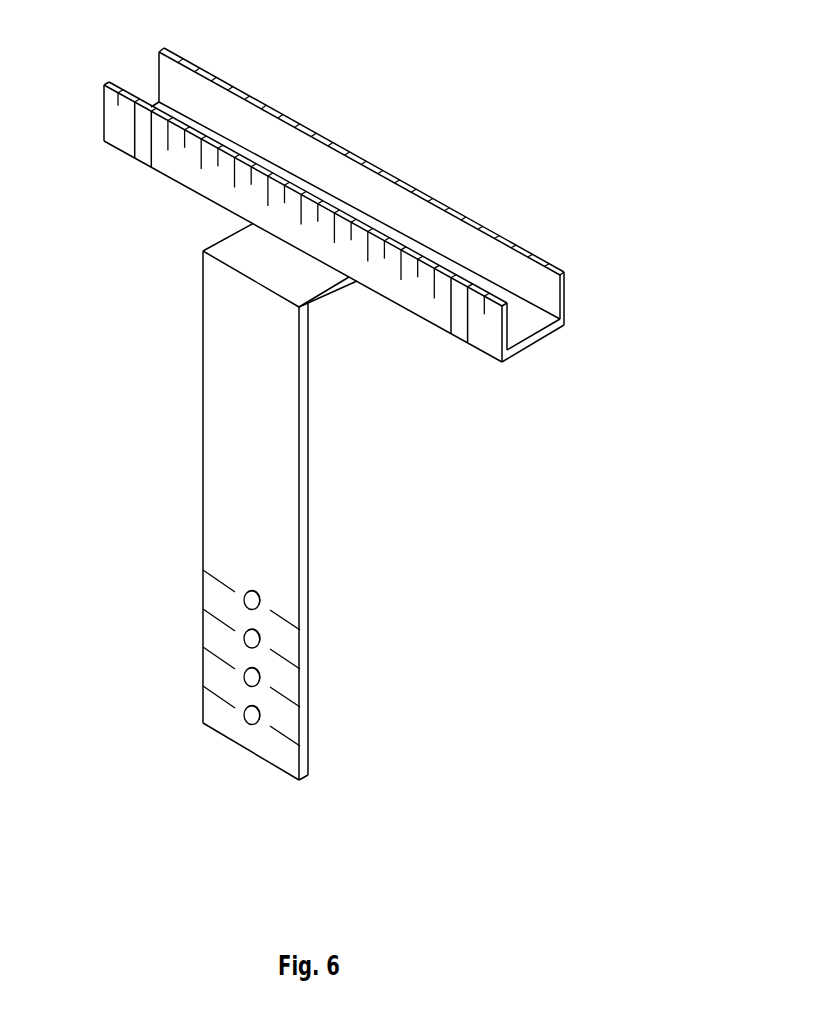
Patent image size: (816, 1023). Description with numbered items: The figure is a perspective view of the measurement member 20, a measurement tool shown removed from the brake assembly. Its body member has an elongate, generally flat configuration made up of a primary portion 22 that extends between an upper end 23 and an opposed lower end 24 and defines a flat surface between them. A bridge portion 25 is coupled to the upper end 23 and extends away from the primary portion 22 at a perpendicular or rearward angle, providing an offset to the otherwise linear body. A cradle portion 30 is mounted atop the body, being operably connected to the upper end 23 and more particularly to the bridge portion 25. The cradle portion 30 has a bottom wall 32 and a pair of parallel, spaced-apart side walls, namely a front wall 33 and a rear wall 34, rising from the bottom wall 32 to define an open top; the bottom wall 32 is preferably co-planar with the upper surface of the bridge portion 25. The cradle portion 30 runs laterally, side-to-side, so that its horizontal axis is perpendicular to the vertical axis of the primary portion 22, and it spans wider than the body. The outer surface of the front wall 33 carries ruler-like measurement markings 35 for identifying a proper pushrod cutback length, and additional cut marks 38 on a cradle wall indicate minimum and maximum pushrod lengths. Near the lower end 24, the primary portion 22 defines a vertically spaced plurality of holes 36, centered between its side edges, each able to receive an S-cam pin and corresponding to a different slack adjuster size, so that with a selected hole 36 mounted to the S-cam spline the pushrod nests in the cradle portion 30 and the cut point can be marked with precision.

The measurement member 20 is at (443, 78).
The primary portion 22 is at (168, 483).
The upper end 23 is at (217, 280).
The lower end 24 is at (228, 740).
The bridge portion 25 is at (290, 272).
The cradle portion 30 is at (122, 53).
The bottom wall 32 is at (523, 318).
The front wall 33 is at (393, 280).
The rear wall 34 is at (527, 280).
The measurement markings 35 is at (235, 177).
The holes 36 is at (251, 643).
The cut marks 38 is at (153, 157).